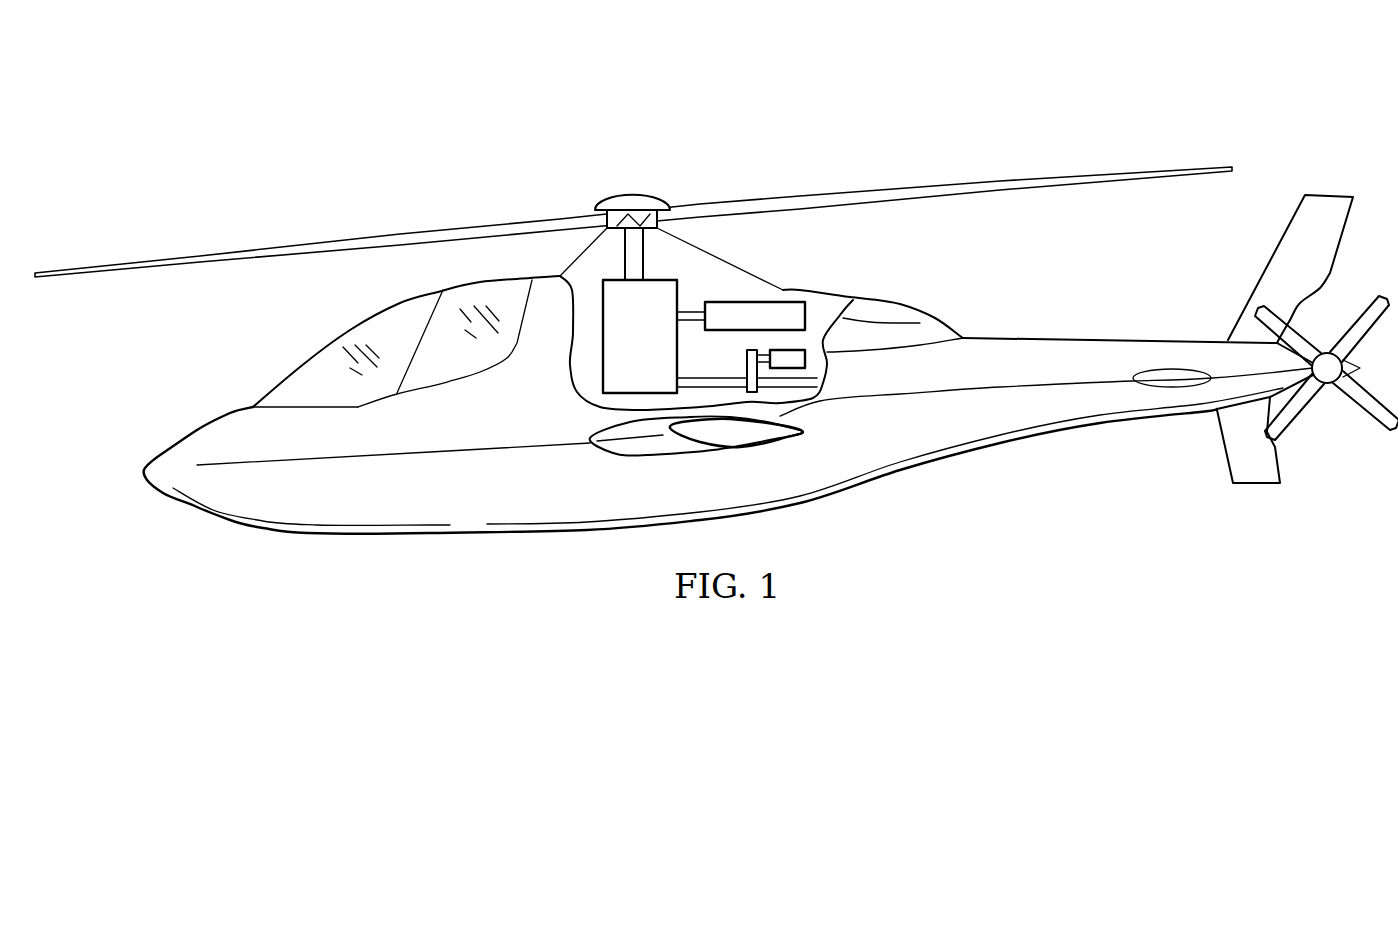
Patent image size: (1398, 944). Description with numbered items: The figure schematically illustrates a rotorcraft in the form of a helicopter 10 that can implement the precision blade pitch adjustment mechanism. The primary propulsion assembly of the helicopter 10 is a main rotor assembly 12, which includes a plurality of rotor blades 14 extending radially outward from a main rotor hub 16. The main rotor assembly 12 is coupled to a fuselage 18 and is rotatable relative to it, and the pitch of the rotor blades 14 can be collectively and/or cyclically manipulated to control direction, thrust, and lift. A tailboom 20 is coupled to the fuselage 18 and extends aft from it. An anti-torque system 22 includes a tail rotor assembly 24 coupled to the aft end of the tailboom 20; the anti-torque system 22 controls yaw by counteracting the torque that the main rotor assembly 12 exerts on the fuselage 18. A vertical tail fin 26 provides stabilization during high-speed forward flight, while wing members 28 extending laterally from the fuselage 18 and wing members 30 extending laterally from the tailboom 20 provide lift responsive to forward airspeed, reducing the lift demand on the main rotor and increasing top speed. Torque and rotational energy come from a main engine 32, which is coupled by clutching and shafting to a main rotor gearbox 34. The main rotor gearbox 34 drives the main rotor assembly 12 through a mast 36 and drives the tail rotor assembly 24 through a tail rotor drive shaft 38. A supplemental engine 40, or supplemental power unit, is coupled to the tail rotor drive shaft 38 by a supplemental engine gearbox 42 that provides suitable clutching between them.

The helicopter 10 is at (995, 84).
The main rotor assembly 12 is at (633, 200).
The rotor blades 14 is at (412, 232).
The main rotor hub 16 is at (627, 196).
The fuselage 18 is at (465, 508).
The tailboom 20 is at (1070, 322).
The anti-torque system 22 is at (1326, 348).
The tail rotor assembly 24 is at (1367, 418).
The vertical tail fin 26 is at (1327, 195).
The wing members 28 is at (662, 453).
The wing members 30 is at (1163, 368).
The main engine 32 is at (787, 300).
The main rotor gearbox 34 is at (602, 365).
The mast 36 is at (622, 266).
The tail rotor drive shaft 38 is at (810, 396).
The supplemental engine 40 is at (806, 351).
The supplemental engine gearbox 42 is at (745, 365).